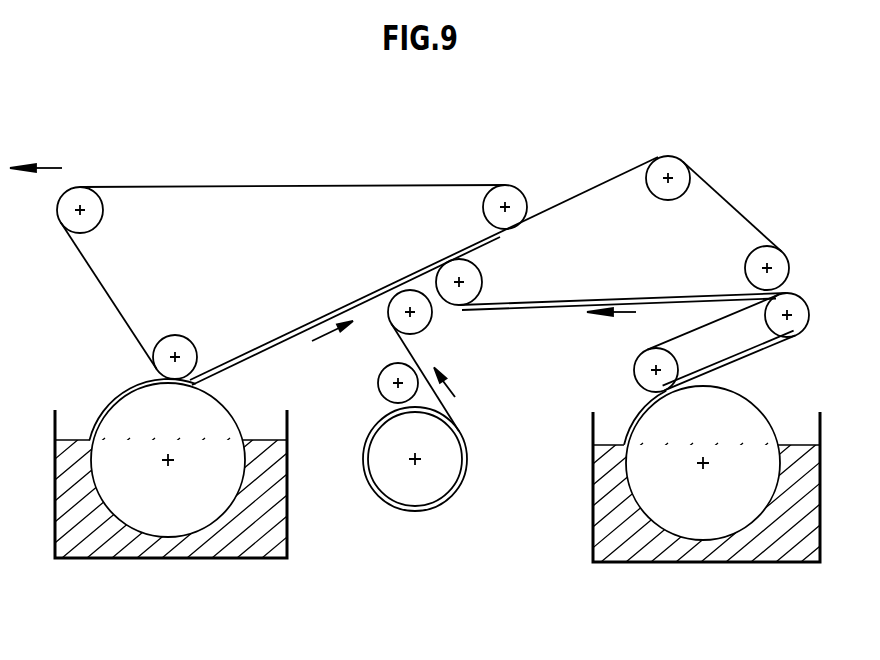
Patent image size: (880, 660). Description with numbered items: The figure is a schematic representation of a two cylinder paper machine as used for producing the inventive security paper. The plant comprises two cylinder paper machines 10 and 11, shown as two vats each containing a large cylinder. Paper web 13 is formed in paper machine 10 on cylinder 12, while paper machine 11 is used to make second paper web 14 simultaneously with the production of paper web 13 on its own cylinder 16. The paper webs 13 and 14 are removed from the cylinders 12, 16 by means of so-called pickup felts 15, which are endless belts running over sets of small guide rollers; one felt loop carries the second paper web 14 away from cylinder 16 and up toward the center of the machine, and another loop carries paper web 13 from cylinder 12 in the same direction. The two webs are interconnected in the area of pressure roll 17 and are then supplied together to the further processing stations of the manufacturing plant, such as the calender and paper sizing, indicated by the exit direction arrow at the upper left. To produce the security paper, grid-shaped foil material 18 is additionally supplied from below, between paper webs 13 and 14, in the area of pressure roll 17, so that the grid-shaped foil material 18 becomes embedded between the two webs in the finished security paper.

The cylinder paper machine 10 is at (713, 545).
The cylinder paper machine 11 is at (177, 545).
The cylinder 12 is at (758, 432).
The paper web 13 is at (551, 307).
The second paper web 14 is at (113, 400).
The pickup felts 15 is at (118, 308).
The cylinder 16 is at (222, 430).
The pressure roll 17 is at (482, 275).
The grid-shaped foil material 18 is at (427, 511).